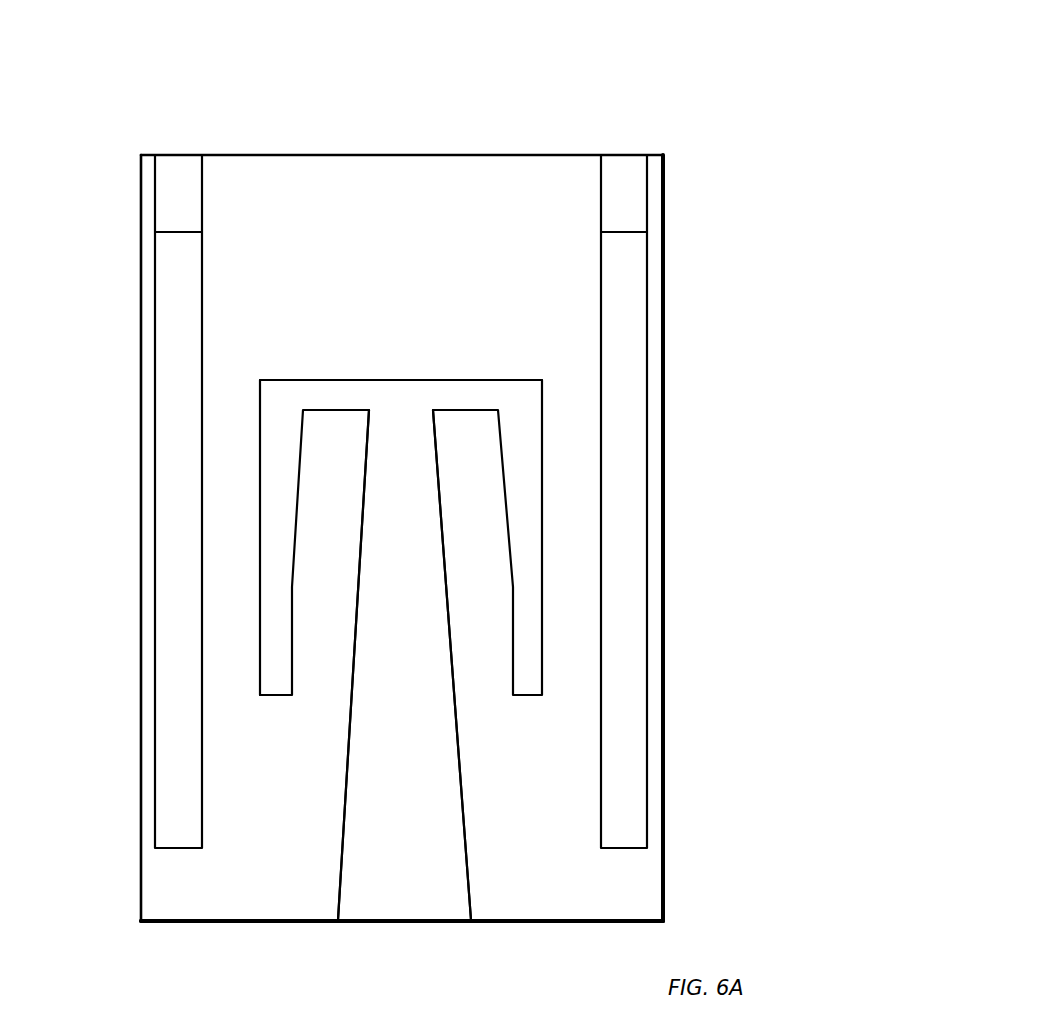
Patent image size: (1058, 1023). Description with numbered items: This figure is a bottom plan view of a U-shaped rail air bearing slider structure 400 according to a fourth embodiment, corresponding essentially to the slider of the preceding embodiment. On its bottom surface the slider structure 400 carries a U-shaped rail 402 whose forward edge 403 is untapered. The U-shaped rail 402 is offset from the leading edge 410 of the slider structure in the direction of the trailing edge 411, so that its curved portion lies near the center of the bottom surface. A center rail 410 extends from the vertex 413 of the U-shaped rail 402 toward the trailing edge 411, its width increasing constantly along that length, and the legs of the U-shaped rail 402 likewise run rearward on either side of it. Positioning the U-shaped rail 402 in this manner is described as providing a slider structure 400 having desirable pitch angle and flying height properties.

The slider structure 400 is at (604, 104).
The U-shaped rail 402 is at (340, 392).
The untapered forward edge 403 is at (474, 378).
The leading edge 410 is at (134, 157).
The trailing edge 411 is at (136, 921).
The vertex 413 is at (399, 432).